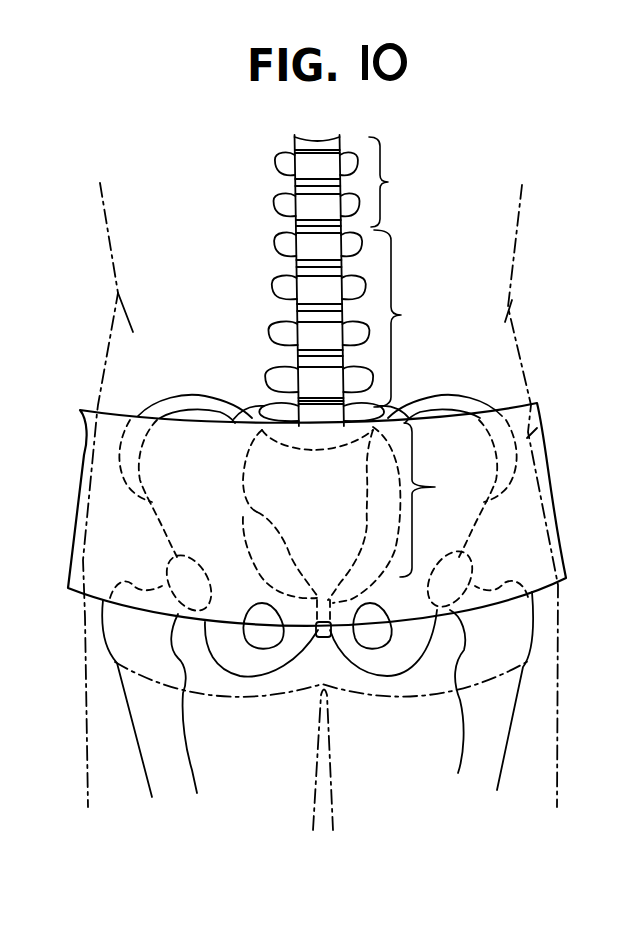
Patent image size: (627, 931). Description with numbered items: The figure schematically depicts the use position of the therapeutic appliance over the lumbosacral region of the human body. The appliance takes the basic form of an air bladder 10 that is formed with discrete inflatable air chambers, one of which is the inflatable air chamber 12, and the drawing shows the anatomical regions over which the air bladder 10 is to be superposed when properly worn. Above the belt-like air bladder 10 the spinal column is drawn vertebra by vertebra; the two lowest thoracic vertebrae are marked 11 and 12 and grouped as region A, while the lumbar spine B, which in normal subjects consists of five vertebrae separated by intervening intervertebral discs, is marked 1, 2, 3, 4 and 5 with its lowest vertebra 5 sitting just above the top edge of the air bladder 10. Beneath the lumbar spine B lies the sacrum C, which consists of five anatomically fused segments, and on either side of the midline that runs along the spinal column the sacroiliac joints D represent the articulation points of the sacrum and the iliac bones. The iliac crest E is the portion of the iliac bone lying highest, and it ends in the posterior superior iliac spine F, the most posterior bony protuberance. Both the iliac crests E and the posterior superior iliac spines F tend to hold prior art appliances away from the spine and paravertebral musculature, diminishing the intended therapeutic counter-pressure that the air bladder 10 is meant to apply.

The air bladder 10 is at (566, 577).
The fifth lumbar vertebra 5 is at (299, 412).
The thoracic vertebrae region A is at (390, 182).
The lumbar spine B is at (398, 318).
The sacrum C is at (319, 519).
The sacroiliac joints D is at (356, 474).
The iliac crest E is at (208, 400).
The posterior superior iliac spine F is at (231, 406).
The eleventh thoracic vertebra 11 is at (311, 177).
The inflatable air chamber 12 is at (309, 219).
The first lumbar vertebra 1 is at (312, 259).
The second lumbar vertebra 2 is at (311, 303).
The third lumbar vertebra 3 is at (311, 348).
The fourth lumbar vertebra 4 is at (311, 395).